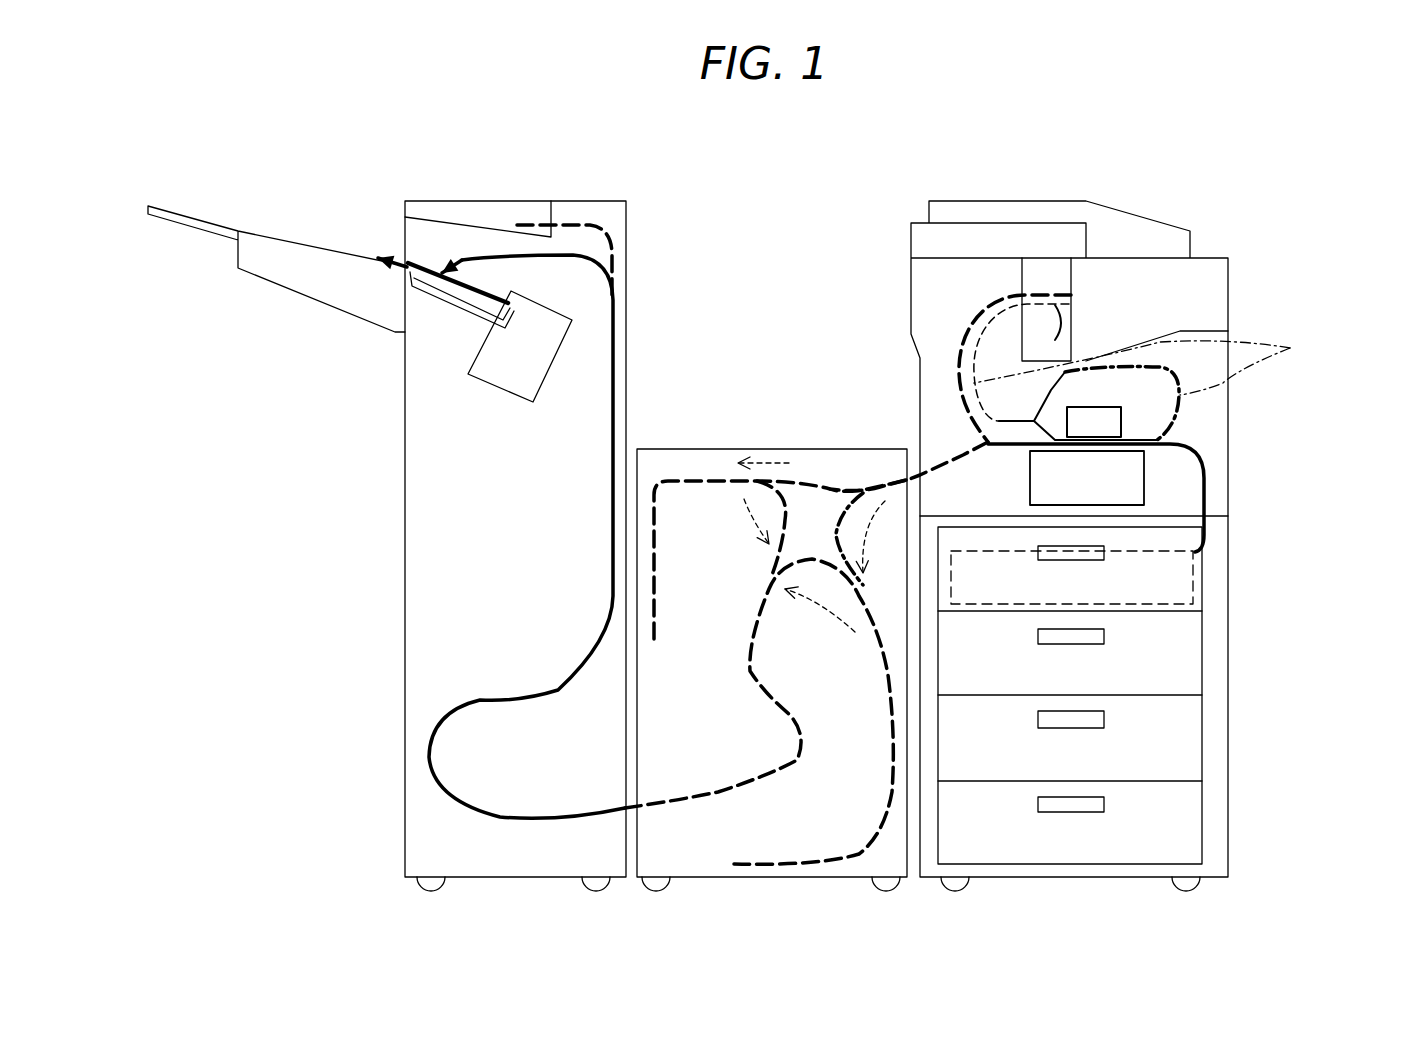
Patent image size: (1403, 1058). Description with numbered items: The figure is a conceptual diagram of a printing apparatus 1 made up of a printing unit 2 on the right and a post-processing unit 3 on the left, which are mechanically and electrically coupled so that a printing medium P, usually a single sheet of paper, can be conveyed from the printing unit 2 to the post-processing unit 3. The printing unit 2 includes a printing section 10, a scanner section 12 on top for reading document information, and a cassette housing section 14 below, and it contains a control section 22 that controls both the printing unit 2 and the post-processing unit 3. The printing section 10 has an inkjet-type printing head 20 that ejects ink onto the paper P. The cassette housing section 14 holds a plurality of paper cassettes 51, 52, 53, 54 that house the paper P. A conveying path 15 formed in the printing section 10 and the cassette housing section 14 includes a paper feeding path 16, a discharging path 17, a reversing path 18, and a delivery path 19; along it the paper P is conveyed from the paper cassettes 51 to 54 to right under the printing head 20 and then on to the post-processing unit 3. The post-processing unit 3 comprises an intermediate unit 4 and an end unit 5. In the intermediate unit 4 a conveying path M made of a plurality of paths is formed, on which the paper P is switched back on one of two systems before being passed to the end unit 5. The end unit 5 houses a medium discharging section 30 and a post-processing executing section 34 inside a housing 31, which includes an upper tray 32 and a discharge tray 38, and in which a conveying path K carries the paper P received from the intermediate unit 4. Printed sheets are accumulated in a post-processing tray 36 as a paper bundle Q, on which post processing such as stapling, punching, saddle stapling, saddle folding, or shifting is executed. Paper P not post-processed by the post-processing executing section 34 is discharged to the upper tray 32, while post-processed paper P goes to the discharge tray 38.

The printing apparatus 1 is at (798, 182).
The printing unit 2 is at (877, 307).
The post-processing unit 3 is at (663, 239).
The intermediate unit 4 is at (766, 566).
The end unit 5 is at (416, 532).
The printing section 10 is at (1232, 517).
The scanner section 12 is at (1064, 200).
The cassette housing section 14 is at (1128, 697).
The conveying path 15 is at (1210, 479).
The paper feeding path 16 is at (1188, 443).
The discharging path 17 is at (990, 309).
The reversing path 18 is at (1153, 363).
The delivery path 19 is at (961, 453).
The printing head 20 is at (1121, 425).
The control section 22 is at (1150, 464).
The medium discharging section 30 is at (452, 350).
The housing 31 is at (402, 520).
The upper tray 32 is at (443, 220).
The post-processing executing section 34 is at (513, 403).
The post-processing tray 36 is at (442, 303).
The discharge tray 38 is at (293, 293).
The paper cassette 51 is at (1203, 567).
The paper cassette 52 is at (1203, 651).
The paper cassette 53 is at (1203, 735).
The paper cassette 54 is at (1178, 818).
The printing medium P is at (1203, 586).
The conveying path K is at (546, 825).
The conveying path M is at (714, 788).
The paper bundle Q is at (417, 260).